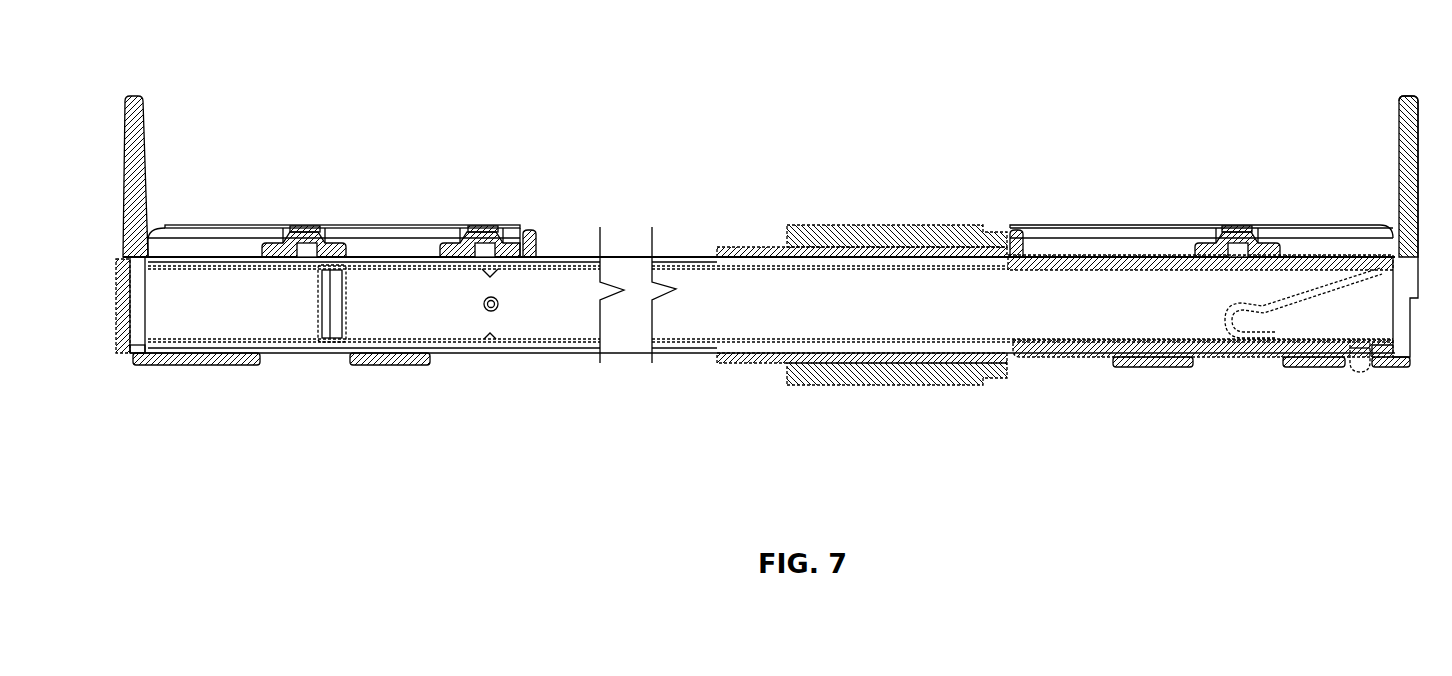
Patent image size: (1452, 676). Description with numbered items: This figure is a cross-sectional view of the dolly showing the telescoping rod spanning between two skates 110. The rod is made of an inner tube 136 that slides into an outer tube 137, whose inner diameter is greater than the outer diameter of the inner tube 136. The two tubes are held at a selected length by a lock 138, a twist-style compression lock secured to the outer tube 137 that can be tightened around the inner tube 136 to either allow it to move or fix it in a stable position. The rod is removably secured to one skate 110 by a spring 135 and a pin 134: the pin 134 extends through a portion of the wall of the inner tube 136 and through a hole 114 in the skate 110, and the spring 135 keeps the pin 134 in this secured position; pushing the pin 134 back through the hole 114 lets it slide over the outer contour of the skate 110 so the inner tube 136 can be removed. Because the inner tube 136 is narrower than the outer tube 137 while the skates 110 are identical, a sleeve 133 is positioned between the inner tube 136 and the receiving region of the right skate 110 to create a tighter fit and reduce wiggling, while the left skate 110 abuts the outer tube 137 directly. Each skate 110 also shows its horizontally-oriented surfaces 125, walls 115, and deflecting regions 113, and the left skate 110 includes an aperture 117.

The skate 110 is at (108, 150).
The deflecting region 113 is at (178, 366).
The hole 114 is at (1350, 368).
The wall 115 is at (147, 165).
The aperture 117 is at (135, 357).
The horizontally-oriented surface 125 is at (246, 225).
The sleeve 133 is at (1155, 255).
The pin 134 is at (1360, 368).
The spring 135 is at (1265, 342).
The inner tube 136 is at (556, 268).
The outer tube 137 is at (544, 256).
The lock 138 is at (731, 247).